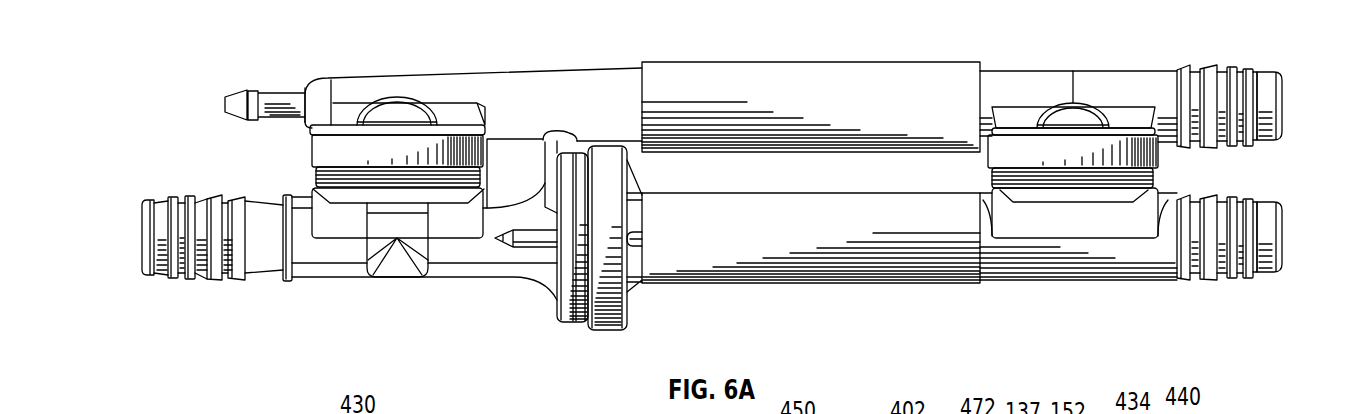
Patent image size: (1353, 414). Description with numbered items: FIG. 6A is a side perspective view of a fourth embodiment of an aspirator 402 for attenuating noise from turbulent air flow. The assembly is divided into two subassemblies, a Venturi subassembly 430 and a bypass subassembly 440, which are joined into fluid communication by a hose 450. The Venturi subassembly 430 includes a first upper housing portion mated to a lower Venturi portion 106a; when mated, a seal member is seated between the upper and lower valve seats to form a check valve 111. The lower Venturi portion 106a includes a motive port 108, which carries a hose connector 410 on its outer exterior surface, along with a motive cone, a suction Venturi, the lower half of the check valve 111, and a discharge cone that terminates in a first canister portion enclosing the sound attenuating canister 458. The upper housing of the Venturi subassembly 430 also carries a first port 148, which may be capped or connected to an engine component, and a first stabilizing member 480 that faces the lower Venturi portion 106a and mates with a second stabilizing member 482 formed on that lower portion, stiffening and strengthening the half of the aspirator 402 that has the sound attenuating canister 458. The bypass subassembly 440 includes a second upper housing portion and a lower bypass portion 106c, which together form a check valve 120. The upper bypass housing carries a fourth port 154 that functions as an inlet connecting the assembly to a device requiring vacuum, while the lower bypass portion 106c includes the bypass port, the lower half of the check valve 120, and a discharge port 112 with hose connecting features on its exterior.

The lower Venturi portion 106a is at (323, 270).
The lower bypass portion 106c is at (1063, 270).
The motive port 108 is at (140, 258).
The check valve 111 is at (300, 160).
The discharge port 112 is at (1283, 254).
The check valve 120 is at (1168, 175).
The first port 148 is at (225, 101).
The fourth port 154 is at (1283, 101).
The aspirator 402 is at (902, 49).
The hose connector 410 is at (258, 200).
The Venturi subassembly 430 is at (473, 65).
The bypass subassembly 440 is at (1077, 57).
The hose 450 is at (739, 51).
The sound attenuating canister 458 is at (642, 306).
The first stabilizing member 480 is at (557, 138).
The second stabilizing member 482 is at (552, 157).